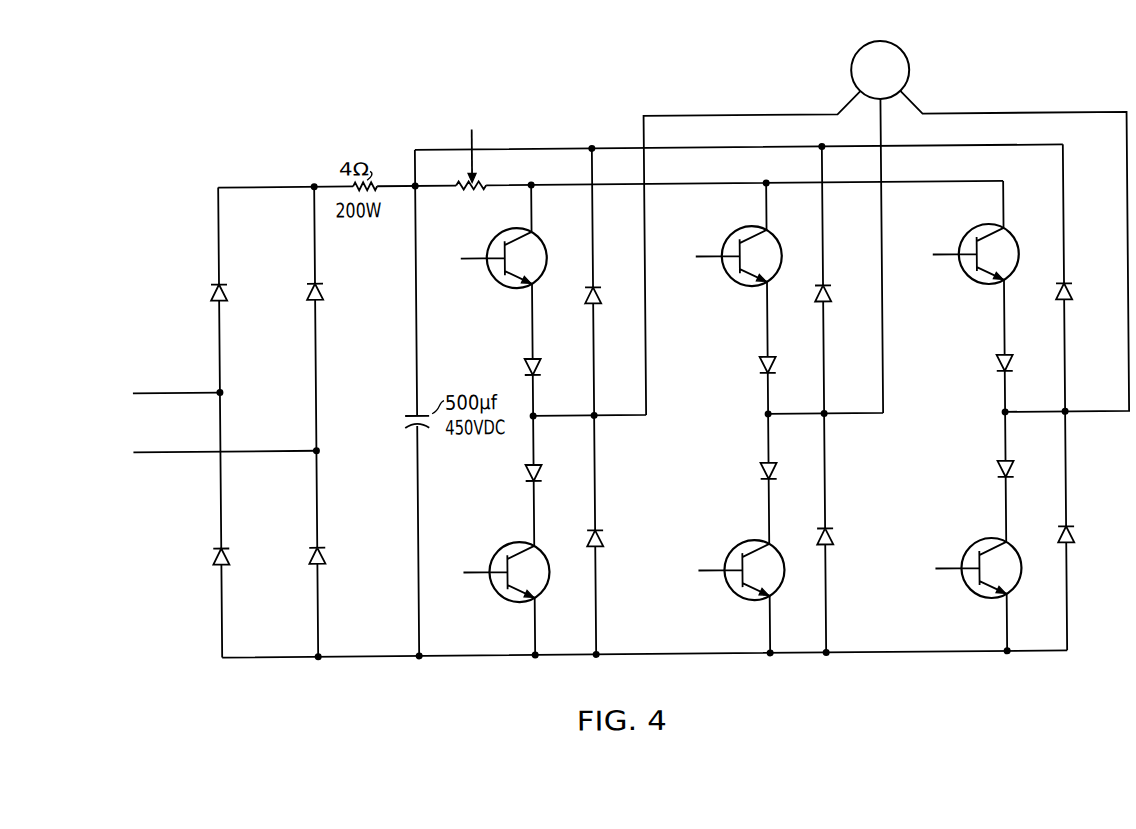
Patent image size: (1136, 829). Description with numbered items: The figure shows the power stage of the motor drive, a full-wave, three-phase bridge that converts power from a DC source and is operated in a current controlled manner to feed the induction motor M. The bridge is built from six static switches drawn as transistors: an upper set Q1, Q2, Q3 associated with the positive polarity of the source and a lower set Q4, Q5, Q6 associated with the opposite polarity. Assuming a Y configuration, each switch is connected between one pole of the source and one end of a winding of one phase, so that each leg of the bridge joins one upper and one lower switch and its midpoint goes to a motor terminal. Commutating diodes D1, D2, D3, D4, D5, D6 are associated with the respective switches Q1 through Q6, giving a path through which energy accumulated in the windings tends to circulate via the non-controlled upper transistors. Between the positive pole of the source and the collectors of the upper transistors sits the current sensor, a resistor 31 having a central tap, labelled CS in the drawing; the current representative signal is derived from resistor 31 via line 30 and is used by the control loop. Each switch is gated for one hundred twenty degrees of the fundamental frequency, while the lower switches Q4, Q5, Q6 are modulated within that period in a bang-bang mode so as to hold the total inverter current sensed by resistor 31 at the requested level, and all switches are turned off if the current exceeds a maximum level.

The line 30 is at (476, 138).
The resistor 31 is at (488, 181).
The current-setting potentiometer CS is at (479, 167).
The motor M is at (875, 83).
The static switch Q1 is at (539, 237).
The static switch Q2 is at (778, 232).
The static switch Q3 is at (1016, 235).
The static switch Q4 is at (543, 544).
The static switch Q5 is at (778, 539).
The static switch Q6 is at (1013, 539).
The commutating diode D1 is at (604, 291).
The commutating diode D2 is at (837, 288).
The commutating diode D3 is at (1076, 287).
The commutating diode D4 is at (607, 528).
The commutating diode D5 is at (842, 530).
The commutating diode D6 is at (1080, 532).